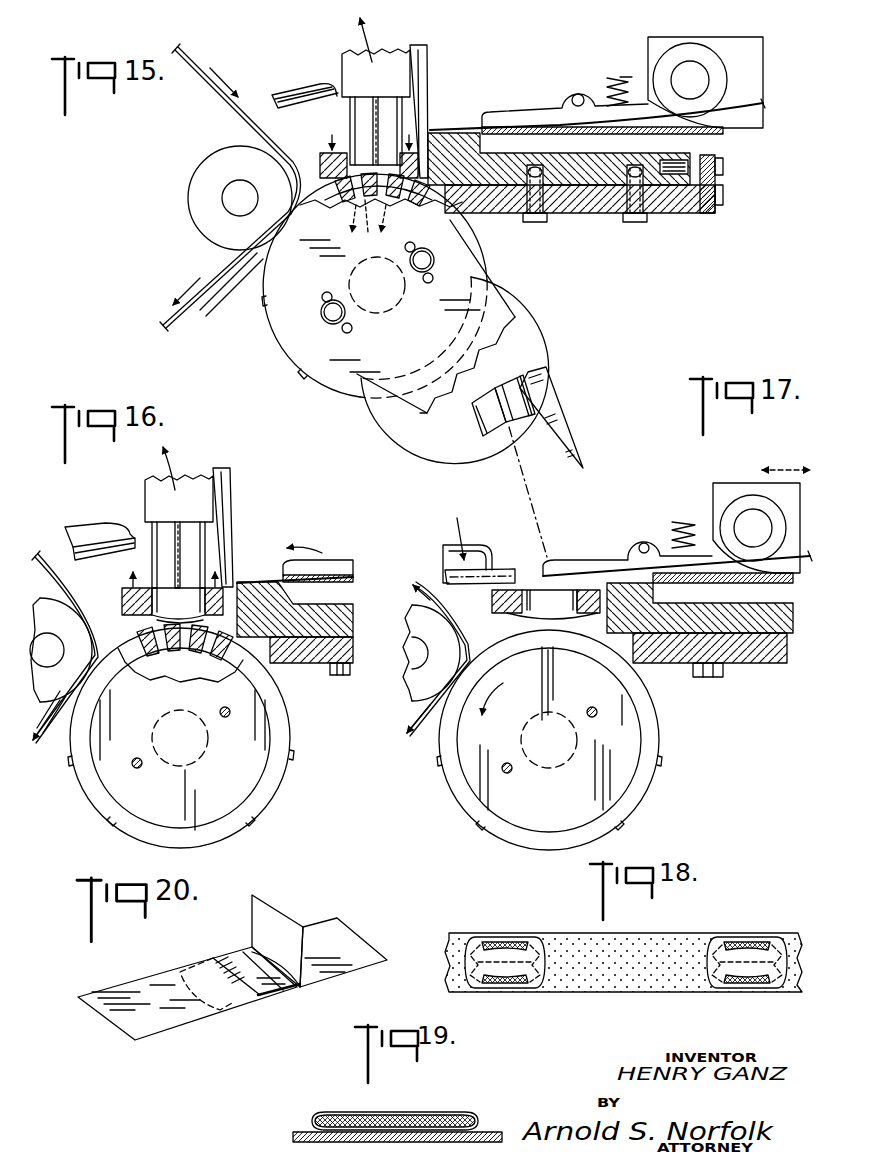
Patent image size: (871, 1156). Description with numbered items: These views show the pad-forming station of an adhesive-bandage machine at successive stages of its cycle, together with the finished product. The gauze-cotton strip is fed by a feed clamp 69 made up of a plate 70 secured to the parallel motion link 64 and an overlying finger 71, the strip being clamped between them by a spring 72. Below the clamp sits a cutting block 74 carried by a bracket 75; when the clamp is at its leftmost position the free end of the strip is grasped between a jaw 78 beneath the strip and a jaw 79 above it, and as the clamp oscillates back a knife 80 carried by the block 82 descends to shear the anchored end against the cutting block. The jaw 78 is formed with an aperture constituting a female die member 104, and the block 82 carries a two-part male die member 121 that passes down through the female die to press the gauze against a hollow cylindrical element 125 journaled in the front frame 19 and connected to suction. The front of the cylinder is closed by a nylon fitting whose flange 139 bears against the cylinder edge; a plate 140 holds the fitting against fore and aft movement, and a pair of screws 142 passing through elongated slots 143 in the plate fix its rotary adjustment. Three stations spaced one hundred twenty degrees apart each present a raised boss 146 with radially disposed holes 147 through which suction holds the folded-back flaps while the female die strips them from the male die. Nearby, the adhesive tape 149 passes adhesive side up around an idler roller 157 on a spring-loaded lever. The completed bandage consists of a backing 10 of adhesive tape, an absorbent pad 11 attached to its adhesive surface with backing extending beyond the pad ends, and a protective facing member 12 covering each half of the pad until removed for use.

In FIG. 20, the backing 10 is at (300, 988).
In FIG. 18, the backing 10 is at (650, 985).
In FIG. 19, the backing 10 is at (500, 1133).
In FIG. 20, the absorbent pad 11 is at (231, 960).
In FIG. 18, the absorbent pad 11 is at (548, 950).
In FIG. 19, the absorbent pad 11 is at (445, 1112).
In FIG. 20, the protective facing member 12 is at (283, 912).
In FIG. 18, the front frame 19 is at (507, 906).
In FIG. 15, the parallel motion link 64 is at (710, 37).
In FIG. 17, the parallel motion link 64 is at (736, 474).
In FIG. 15, the feed clamp 69 is at (511, 98).
In FIG. 16, the feed clamp 69 is at (331, 560).
In FIG. 17, the feed clamp 69 is at (595, 557).
In FIG. 15, the plate 70 is at (722, 134).
In FIG. 16, the plate 70 is at (342, 583).
In FIG. 17, the plate 70 is at (780, 583).
In FIG. 15, the finger 71 is at (478, 127).
In FIG. 16, the finger 71 is at (283, 572).
In FIG. 17, the finger 71 is at (552, 588).
In FIG. 15, the spring 72 is at (615, 78).
In FIG. 17, the spring 72 is at (693, 525).
In FIG. 15, the cutting block 74 is at (455, 133).
In FIG. 16, the cutting block 74 is at (278, 655).
In FIG. 17, the cutting block 74 is at (650, 656).
In FIG. 15, the bracket 75 is at (592, 215).
In FIG. 16, the bracket 75 is at (313, 665).
In FIG. 17, the bracket 75 is at (765, 664).
In FIG. 15, the jaw 78 is at (322, 155).
In FIG. 16, the jaw 78 is at (172, 593).
In FIG. 17, the jaw 78 is at (493, 598).
In FIG. 15, the jaw 79 is at (325, 86).
In FIG. 16, the jaw 79 is at (125, 529).
In FIG. 17, the jaw 79 is at (505, 565).
In FIG. 15, the knife 80 is at (428, 72).
In FIG. 16, the knife 80 is at (233, 491).
In FIG. 17, the knife 80 is at (546, 388).
In FIG. 15, the block 82 is at (390, 55).
In FIG. 16, the block 82 is at (188, 478).
In FIG. 17, the block 82 is at (510, 377).
In FIG. 15, the female die member 104 is at (349, 224).
In FIG. 16, the female die member 104 is at (178, 603).
In FIG. 17, the female die member 104 is at (513, 616).
In FIG. 15, the male die member 121 is at (385, 112).
In FIG. 16, the male die member 121 is at (190, 547).
In FIG. 17, the male die member 121 is at (528, 415).
In FIG. 15, the hollow cylindrical element 125 is at (373, 283).
In FIG. 16, the hollow cylindrical element 125 is at (165, 655).
In FIG. 17, the hollow cylindrical element 125 is at (549, 740).
In FIG. 15, the flange 139 is at (484, 272).
In FIG. 16, the flange 139 is at (238, 829).
In FIG. 17, the flange 139 is at (660, 745).
In FIG. 15, the plate 140 is at (500, 303).
In FIG. 15, the screws 142 is at (433, 257).
In FIG. 16, the screws 142 is at (232, 714).
In FIG. 17, the screws 142 is at (597, 717).
In FIG. 15, the slots 143 is at (433, 278).
In FIG. 15, the boss 146 is at (293, 368).
In FIG. 16, the boss 146 is at (95, 818).
In FIG. 17, the boss 146 is at (648, 805).
In FIG. 15, the holes 147 is at (338, 186).
In FIG. 16, the holes 147 is at (140, 646).
In FIG. 15, the tape 149 is at (201, 69).
In FIG. 16, the tape 149 is at (42, 556).
In FIG. 17, the tape 149 is at (423, 583).
In FIG. 15, the idler roller 157 is at (191, 197).
In FIG. 16, the idler roller 157 is at (62, 618).
In FIG. 17, the idler roller 157 is at (408, 678).